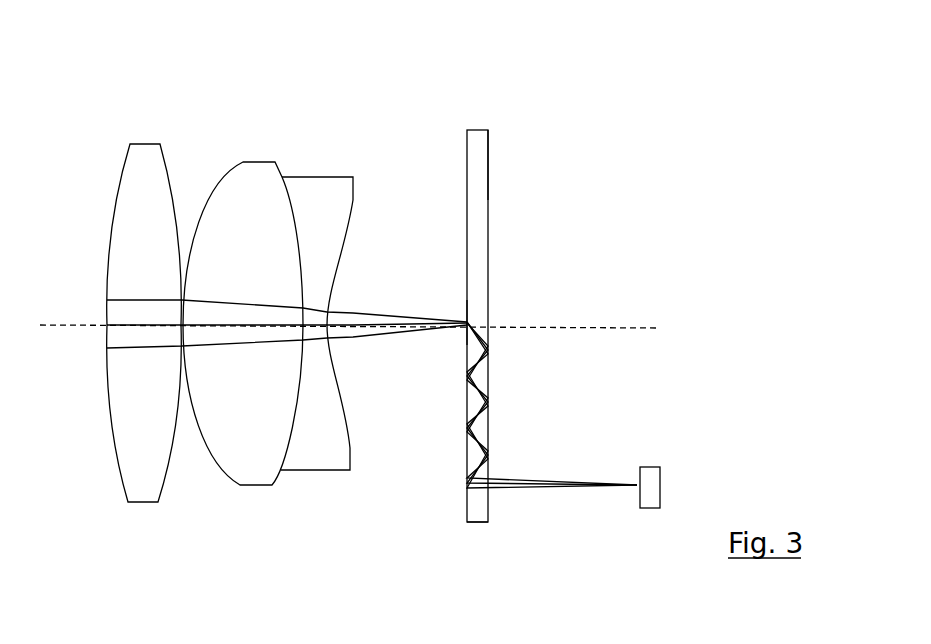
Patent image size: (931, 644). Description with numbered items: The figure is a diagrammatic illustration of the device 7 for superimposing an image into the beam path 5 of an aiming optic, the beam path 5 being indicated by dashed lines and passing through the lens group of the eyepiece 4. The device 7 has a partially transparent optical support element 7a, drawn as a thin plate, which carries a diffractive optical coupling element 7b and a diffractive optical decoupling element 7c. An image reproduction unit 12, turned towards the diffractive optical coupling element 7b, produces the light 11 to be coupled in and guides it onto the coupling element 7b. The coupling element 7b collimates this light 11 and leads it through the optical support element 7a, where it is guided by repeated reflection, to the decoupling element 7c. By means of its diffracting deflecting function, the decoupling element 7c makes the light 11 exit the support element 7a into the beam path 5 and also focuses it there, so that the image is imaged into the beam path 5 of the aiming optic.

The eyepiece 4 is at (252, 140).
The beam path 5 is at (618, 328).
The device 7 is at (504, 163).
The partially transparent optical support element 7a is at (483, 147).
The diffractive optical coupling element 7b is at (467, 498).
The diffractive optical decoupling element 7c is at (466, 321).
The light to be coupled in 11 is at (404, 312).
The image reproduction unit 12 is at (648, 497).